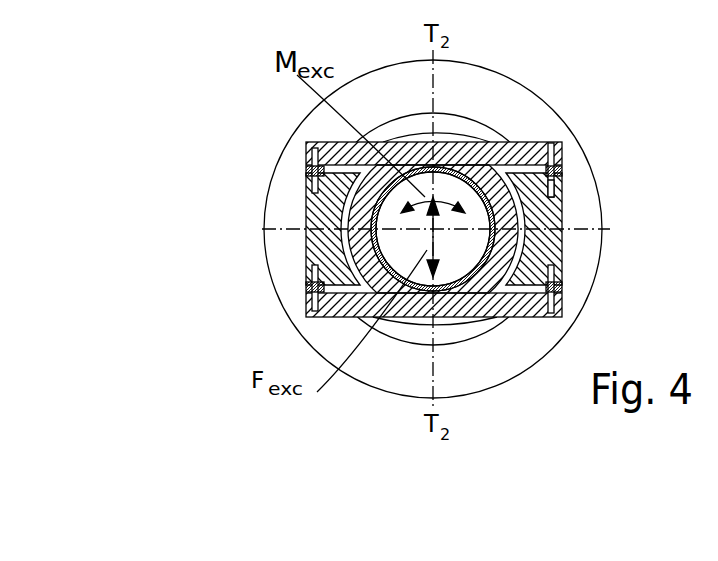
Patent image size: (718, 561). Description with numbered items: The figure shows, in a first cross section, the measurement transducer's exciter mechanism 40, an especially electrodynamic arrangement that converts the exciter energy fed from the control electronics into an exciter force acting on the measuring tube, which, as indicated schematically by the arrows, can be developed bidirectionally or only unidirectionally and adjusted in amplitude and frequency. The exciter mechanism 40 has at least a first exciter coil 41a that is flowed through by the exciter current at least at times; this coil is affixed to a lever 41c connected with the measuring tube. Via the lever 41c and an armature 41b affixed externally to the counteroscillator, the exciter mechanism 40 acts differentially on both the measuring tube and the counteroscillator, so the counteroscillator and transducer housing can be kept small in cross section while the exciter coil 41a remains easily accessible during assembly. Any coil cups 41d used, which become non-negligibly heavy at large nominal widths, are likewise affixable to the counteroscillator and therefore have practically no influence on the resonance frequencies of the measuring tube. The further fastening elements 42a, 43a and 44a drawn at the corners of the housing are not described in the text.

The exciter mechanism 40 is at (575, 110).
The first exciter coil 41a is at (553, 167).
The armature 41b is at (557, 187).
The lever 41c is at (527, 142).
The coil cup 41d is at (558, 175).
The lower left fastening screw 42a is at (307, 289).
The upper left fastening screw 43a is at (308, 171).
The lower right fastening screw 44a is at (558, 289).